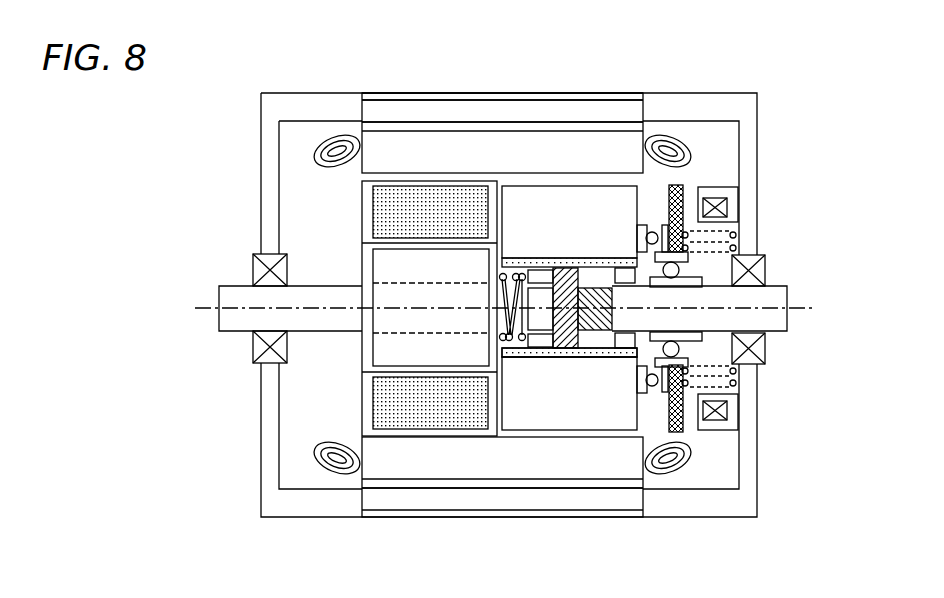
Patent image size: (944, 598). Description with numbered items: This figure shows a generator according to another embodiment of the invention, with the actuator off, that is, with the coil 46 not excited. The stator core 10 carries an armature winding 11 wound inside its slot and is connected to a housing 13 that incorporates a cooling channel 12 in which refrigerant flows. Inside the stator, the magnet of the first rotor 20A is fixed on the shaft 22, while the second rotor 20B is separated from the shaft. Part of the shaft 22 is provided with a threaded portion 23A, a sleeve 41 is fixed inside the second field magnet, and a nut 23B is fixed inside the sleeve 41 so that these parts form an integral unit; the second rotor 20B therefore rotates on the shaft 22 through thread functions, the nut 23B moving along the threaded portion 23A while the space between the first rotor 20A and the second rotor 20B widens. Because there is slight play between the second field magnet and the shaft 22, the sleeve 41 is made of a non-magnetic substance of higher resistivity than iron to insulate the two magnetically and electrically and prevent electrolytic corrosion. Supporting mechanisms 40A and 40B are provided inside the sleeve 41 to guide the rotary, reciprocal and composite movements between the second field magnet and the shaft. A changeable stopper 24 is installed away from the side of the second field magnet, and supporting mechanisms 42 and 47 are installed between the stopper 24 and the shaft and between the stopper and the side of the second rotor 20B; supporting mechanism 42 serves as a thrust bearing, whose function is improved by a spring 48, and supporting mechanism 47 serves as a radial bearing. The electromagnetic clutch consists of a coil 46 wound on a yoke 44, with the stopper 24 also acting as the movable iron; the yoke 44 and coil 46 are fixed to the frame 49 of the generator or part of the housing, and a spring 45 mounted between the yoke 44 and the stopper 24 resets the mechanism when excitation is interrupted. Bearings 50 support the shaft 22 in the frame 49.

The stator core 10 is at (380, 150).
The armature winding 11 is at (322, 142).
The cooling channel 12 is at (420, 121).
The housing 13 is at (458, 92).
The first rotor 20A is at (362, 206).
The second rotor 20B is at (515, 186).
The shaft 22 is at (220, 331).
The threaded portion 23A is at (598, 290).
The nut 23B is at (570, 268).
The stopper 24 is at (683, 186).
The supporting mechanism 40A is at (540, 347).
The supporting mechanism 40B is at (623, 348).
The sleeve 41 is at (545, 272).
The supporting mechanism 42 is at (650, 388).
The yoke 44 is at (722, 180).
The spring 45 is at (712, 249).
The coil 46 is at (725, 204).
The supporting mechanism 47 is at (679, 352).
The spring 48 is at (513, 357).
The frame 49 is at (261, 136).
The bearing 50 is at (256, 363).